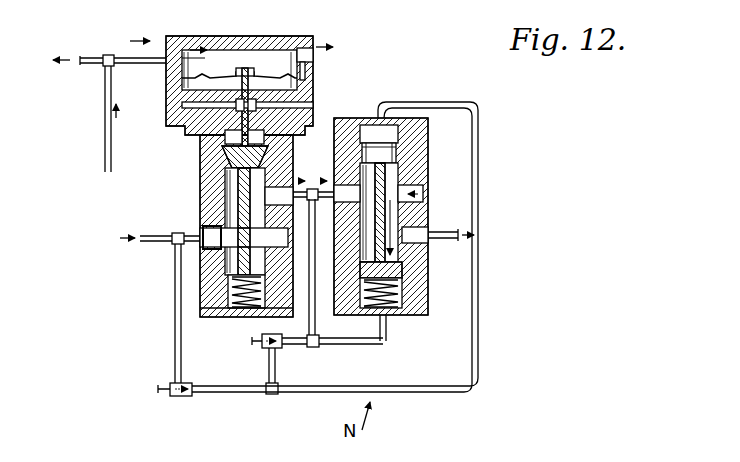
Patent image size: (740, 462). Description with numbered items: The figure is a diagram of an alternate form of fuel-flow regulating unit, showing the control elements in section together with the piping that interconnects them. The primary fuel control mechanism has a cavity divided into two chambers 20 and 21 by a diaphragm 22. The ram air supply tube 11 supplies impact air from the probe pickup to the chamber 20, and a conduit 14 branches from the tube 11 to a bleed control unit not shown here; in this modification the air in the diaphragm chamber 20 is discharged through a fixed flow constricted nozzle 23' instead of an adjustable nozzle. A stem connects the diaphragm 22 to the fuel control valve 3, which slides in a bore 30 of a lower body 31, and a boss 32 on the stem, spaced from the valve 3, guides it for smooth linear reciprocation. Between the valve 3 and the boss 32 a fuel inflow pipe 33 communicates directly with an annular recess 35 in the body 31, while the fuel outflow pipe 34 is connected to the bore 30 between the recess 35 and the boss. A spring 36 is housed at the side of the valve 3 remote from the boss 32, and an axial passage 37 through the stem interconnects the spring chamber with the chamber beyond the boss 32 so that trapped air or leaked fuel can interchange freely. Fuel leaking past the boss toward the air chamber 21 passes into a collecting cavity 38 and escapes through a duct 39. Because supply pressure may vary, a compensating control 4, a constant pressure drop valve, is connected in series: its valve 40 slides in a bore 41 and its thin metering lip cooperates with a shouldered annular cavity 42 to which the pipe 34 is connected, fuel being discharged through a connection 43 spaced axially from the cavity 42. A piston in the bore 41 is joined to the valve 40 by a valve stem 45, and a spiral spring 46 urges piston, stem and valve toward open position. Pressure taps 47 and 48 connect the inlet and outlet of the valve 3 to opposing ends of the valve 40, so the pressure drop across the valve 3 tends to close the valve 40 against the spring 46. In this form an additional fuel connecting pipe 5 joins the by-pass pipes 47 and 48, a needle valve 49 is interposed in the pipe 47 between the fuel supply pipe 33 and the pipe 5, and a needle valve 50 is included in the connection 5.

The fuel control valve 3 is at (215, 236).
The compensating control 4 is at (334, 147).
The fuel connecting pipe 5 is at (269, 365).
The ram air supply tube 11 is at (105, 96).
The conduit 14 is at (100, 57).
The chamber 20 is at (220, 50).
The chamber 21 is at (182, 86).
The diaphragm 22 is at (262, 66).
The fixed flow constricted nozzle 23' is at (326, 43).
The bore 30 is at (228, 298).
The lower body 31 is at (200, 172).
The boss 32 is at (230, 150).
The fuel inflow pipe 33 is at (172, 234).
The fuel outflow pipe 34 is at (299, 187).
The annular recess 35 is at (200, 247).
The spring 36 is at (236, 315).
The axial passage 37 is at (238, 190).
The collecting cavity 38 is at (236, 105).
The duct 39 is at (305, 80).
The valve 40 is at (398, 150).
The bore 41 is at (400, 218).
The annular cavity 42 is at (423, 194).
The connection 43 is at (440, 240).
The valve stem 45 is at (383, 240).
The spiral spring 46 is at (386, 318).
The pressure tap 47 is at (412, 378).
The pressure tap 48 is at (315, 335).
The needle valve 49 is at (170, 385).
The needle valve 50 is at (276, 335).